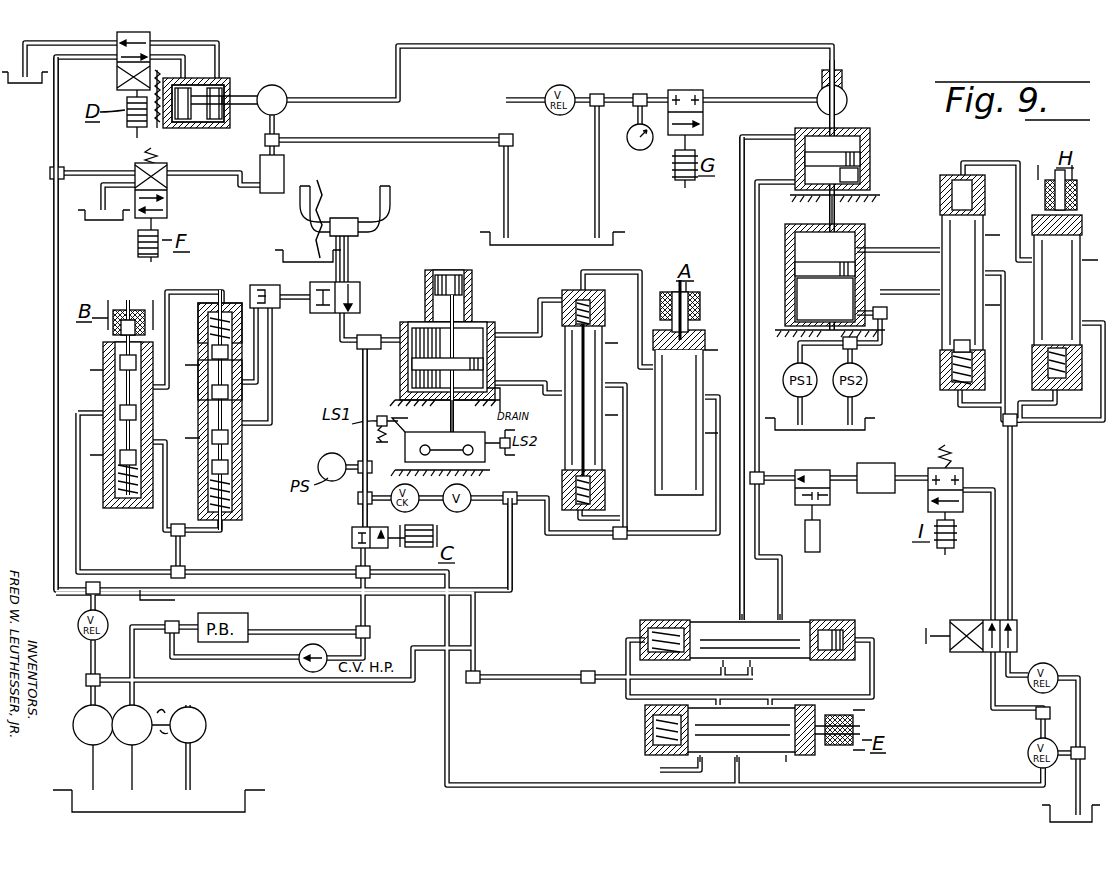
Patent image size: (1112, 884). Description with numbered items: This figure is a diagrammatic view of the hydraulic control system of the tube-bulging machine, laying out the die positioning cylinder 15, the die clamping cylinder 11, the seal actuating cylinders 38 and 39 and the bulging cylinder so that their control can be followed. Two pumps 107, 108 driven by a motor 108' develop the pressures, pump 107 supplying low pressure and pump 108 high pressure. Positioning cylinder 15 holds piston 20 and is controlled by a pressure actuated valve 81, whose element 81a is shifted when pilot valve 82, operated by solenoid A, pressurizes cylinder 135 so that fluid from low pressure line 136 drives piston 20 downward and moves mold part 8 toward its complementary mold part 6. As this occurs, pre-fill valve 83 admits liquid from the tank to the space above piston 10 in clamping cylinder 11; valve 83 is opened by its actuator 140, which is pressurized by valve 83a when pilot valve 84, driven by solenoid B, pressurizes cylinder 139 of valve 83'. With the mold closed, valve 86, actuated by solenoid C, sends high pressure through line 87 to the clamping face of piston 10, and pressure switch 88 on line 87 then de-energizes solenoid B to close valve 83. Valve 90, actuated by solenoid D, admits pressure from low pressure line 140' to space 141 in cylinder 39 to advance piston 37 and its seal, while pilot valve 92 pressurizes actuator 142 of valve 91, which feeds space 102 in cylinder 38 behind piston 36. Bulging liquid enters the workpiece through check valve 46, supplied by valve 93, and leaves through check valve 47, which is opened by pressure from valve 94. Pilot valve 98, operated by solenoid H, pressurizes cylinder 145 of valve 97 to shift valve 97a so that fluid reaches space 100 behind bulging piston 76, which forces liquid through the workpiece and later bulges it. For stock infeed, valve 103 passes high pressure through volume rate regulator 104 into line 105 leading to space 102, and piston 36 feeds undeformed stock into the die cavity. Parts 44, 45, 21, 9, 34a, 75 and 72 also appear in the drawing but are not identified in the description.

The valve 90 is at (148, 33).
The piston 44 is at (186, 86).
The piston 45 is at (217, 86).
The check valve 47 is at (274, 86).
The piston 37 is at (205, 126).
The seal actuating cylinder 39 is at (175, 125).
The space 141 is at (160, 120).
The valve 94 is at (167, 200).
The cylinder 139 is at (220, 304).
The actuator 140 is at (265, 283).
The pre-fill valve 83 is at (350, 287).
The piston 20 is at (445, 290).
The die positioning cylinder 15 is at (425, 292).
The piston 21 is at (447, 363).
The die clamping cylinder 11 is at (490, 336).
The piston 10 is at (484, 366).
The mold part 8 is at (410, 419).
The piston rod 9 is at (455, 420).
The mold part 6 is at (408, 450).
The line 87 is at (362, 386).
The pressure switch 88 is at (328, 455).
The valve 86 is at (352, 540).
The pilot valve 84 is at (115, 360).
The valve 83' is at (205, 380).
The valve 83a is at (232, 440).
The low pressure line 140' is at (29, 323).
The valve 81a is at (596, 296).
The pressure actuated valve 81 is at (603, 318).
The pilot valve 82 is at (697, 362).
The cylinder 135 is at (565, 478).
The low pressure line 136 is at (530, 560).
The valve 93 is at (698, 90).
The check valve 46 is at (846, 92).
The piston rod 34a is at (842, 112).
The seal actuating cylinder 38 is at (868, 142).
The piston 36 is at (860, 160).
The space 102 is at (860, 183).
The rod 75 is at (836, 220).
The cylinder 72 is at (790, 246).
The bulging piston 76 is at (856, 276).
The space 100 is at (852, 311).
The pressure actuated valve 97 is at (940, 232).
The valve 97a is at (950, 344).
The cylinder 145 is at (942, 360).
The pilot valve 98 is at (1062, 270).
The line 105 is at (755, 450).
The volume rate regulator 104 is at (878, 462).
The valve 103 is at (960, 472).
The actuator 142 is at (684, 618).
The valve 91 is at (782, 647).
The pilot valve 92 is at (744, 738).
The pump 107 is at (75, 730).
The pump 108 is at (147, 747).
The motor 108' is at (193, 741).